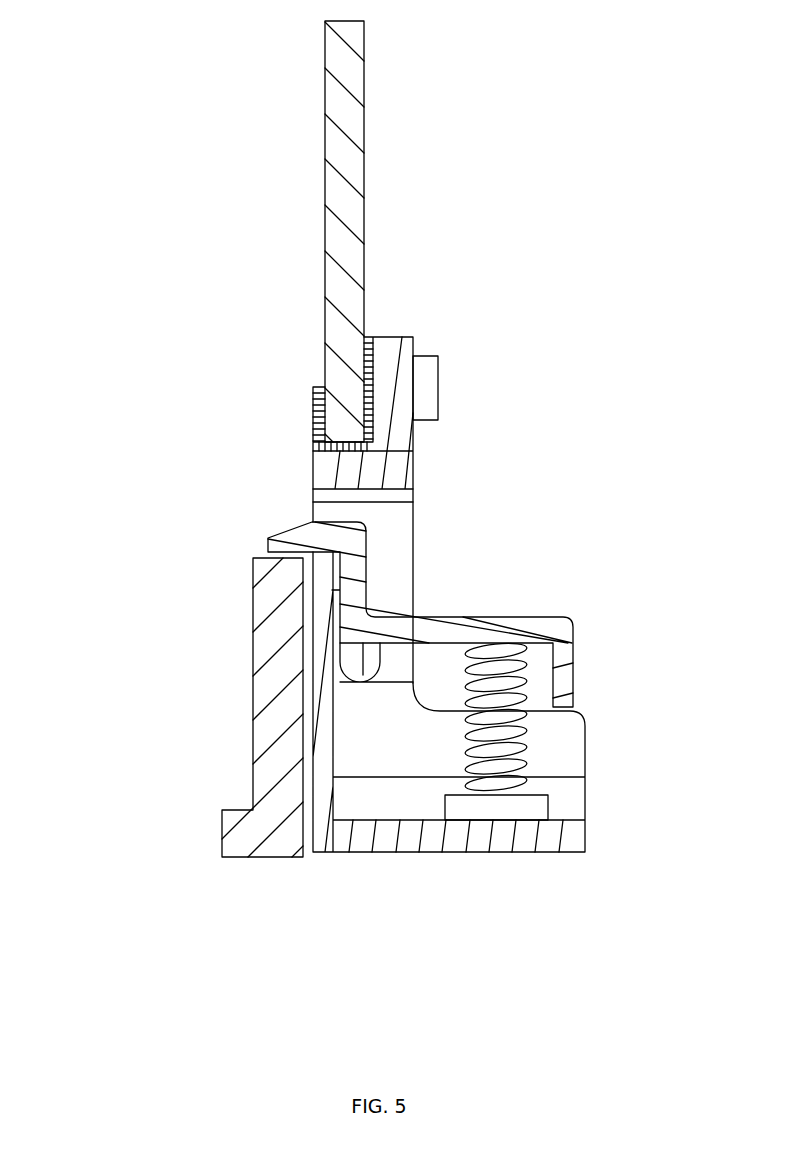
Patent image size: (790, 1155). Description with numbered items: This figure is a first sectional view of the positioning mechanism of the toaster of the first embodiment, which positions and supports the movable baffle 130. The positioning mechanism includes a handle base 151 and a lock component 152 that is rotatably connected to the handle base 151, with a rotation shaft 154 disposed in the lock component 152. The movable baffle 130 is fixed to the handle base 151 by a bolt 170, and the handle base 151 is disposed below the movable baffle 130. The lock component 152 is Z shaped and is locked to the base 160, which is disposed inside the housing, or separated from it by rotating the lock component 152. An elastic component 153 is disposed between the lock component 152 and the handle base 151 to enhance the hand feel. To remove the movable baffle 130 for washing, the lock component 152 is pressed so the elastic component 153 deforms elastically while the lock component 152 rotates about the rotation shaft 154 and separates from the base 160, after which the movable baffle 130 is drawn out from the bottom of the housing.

The movable baffle 130 is at (342, 205).
The bolt 170 is at (420, 387).
The handle base 151 is at (365, 827).
The lock component 152 is at (460, 625).
The elastic component 153 is at (497, 697).
The rotation shaft 154 is at (372, 662).
The base 160 is at (275, 678).